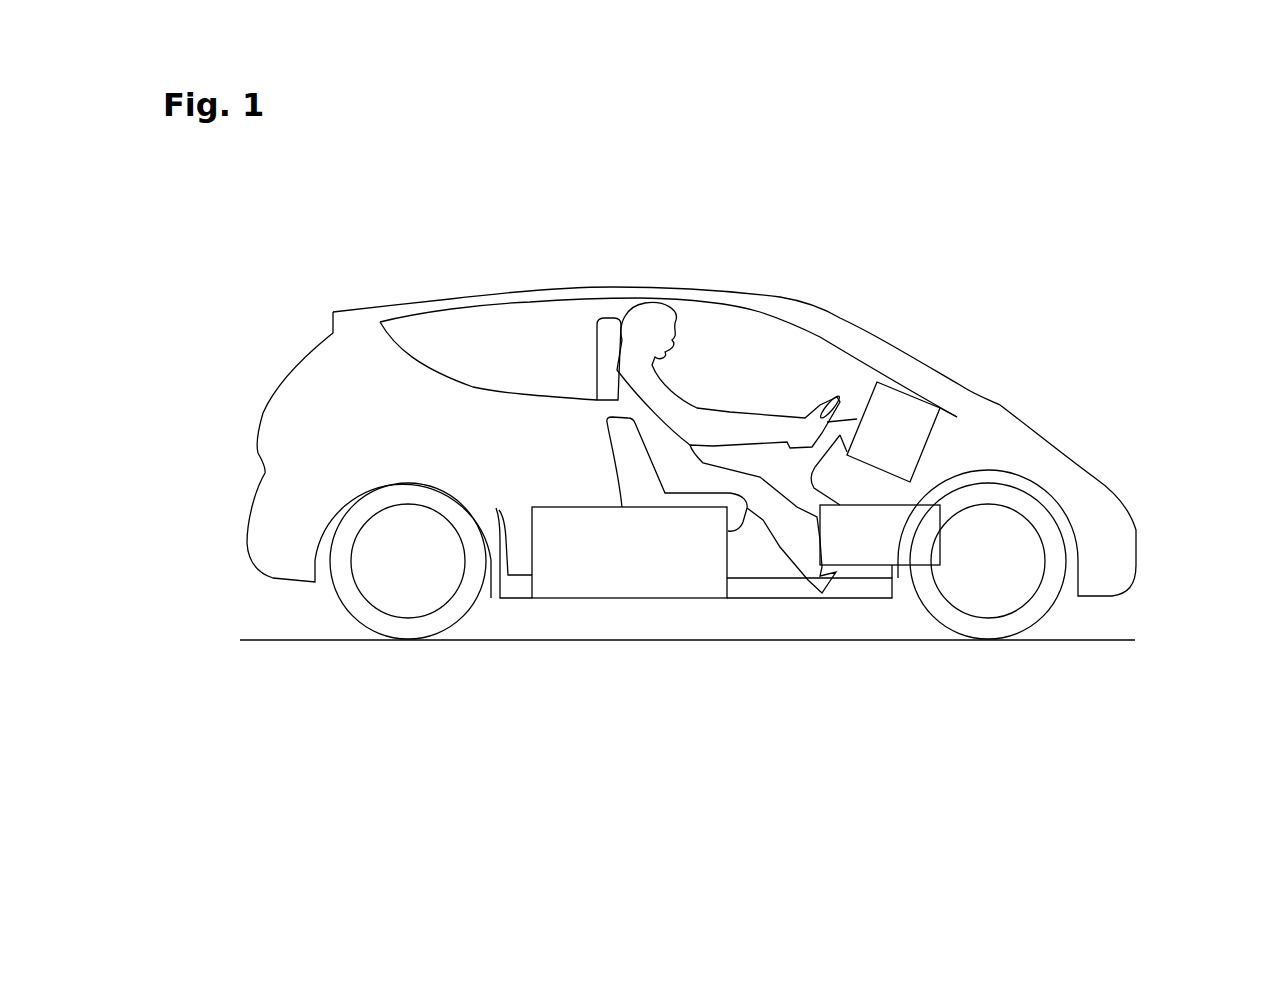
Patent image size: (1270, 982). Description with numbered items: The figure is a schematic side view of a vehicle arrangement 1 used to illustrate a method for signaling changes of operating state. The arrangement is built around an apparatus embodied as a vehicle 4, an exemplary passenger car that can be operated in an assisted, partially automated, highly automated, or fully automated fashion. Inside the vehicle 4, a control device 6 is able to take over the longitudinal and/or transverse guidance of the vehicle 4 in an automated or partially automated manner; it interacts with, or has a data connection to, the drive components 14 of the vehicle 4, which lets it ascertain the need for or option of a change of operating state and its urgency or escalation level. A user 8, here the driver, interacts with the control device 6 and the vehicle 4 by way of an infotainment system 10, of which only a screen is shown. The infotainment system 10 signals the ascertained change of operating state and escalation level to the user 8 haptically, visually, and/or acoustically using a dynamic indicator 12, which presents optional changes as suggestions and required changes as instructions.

The vehicle arrangement 1 is at (426, 202).
The vehicle 4 is at (556, 278).
The control device 6 is at (862, 567).
The user 8 is at (680, 300).
The infotainment system 10 is at (913, 382).
The indicator 12 is at (893, 432).
The drive components 14 is at (628, 600).